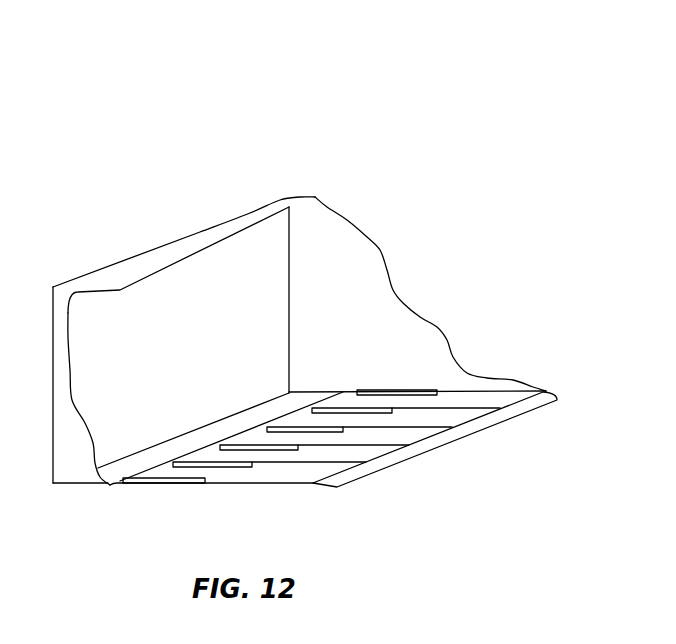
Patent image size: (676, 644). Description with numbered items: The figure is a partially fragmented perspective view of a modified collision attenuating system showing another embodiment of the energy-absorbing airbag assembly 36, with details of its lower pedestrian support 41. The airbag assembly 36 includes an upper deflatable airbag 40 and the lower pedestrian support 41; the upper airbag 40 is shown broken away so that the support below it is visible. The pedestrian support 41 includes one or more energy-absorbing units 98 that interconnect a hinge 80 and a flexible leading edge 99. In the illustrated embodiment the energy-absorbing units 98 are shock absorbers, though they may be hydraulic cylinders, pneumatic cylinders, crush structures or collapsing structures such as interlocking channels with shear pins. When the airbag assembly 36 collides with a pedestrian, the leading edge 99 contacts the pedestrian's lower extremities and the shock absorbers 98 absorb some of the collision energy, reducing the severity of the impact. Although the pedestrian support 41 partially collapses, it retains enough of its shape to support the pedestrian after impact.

The energy-absorbing airbag assembly 36 is at (268, 142).
The upper deflatable airbag 40 is at (312, 197).
The lower pedestrian support 41 is at (287, 485).
The hinge 80 is at (117, 483).
The energy-absorbing units 98 is at (206, 488).
The flexible leading edge 99 is at (340, 479).